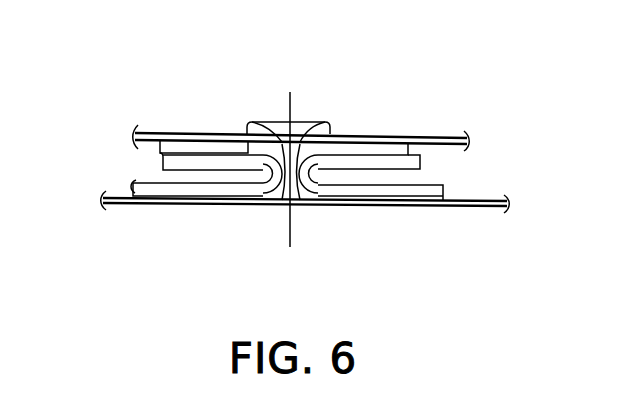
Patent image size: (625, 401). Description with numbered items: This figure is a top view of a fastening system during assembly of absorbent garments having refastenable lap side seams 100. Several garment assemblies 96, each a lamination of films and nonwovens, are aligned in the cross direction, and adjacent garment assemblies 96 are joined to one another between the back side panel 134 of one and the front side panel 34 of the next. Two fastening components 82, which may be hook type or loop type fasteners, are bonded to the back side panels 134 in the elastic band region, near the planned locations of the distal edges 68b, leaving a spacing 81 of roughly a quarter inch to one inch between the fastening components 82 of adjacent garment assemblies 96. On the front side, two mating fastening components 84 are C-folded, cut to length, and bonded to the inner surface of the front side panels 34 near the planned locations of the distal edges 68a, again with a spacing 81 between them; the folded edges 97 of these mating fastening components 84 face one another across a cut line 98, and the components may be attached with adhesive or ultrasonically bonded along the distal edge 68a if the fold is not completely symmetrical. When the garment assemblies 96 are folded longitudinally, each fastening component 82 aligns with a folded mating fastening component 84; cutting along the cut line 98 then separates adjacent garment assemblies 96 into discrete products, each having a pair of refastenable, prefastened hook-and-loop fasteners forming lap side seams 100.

The front side panel 34 is at (459, 214).
The back side panel 134 is at (447, 124).
The garment assembly 96 is at (192, 80).
The mating fastening component 84 is at (141, 165).
The fastening component 82 is at (423, 155).
The spacing 81 is at (298, 124).
The lap side seam 100 is at (268, 125).
The distal edge 68b is at (281, 138).
The distal edge 68a is at (287, 206).
The folded edge 97 is at (283, 206).
The cut line 98 is at (283, 257).